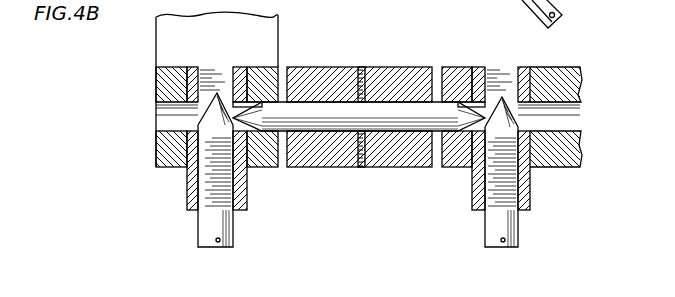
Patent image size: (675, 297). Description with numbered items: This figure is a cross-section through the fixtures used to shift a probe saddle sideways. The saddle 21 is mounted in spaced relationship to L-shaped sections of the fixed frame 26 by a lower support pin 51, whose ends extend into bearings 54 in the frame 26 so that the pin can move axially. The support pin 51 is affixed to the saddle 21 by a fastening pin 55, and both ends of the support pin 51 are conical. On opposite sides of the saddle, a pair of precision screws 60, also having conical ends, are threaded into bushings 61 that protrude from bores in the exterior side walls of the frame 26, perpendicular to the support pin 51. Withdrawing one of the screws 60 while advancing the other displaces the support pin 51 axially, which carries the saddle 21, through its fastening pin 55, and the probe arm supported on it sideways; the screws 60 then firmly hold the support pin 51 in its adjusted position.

The saddle 21 is at (348, 168).
The frame 26 is at (156, 77).
The support pin 51 is at (317, 131).
The bearings 54 is at (256, 92).
The fastening pin 55 is at (361, 67).
The precision screws 60 is at (210, 248).
The bushings 61 is at (188, 190).